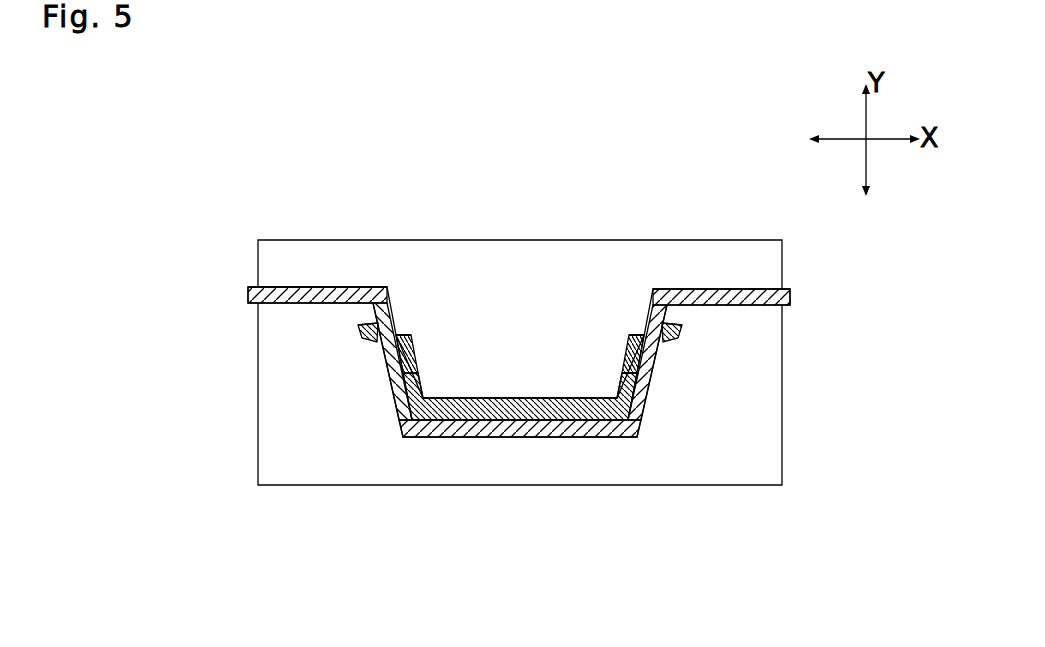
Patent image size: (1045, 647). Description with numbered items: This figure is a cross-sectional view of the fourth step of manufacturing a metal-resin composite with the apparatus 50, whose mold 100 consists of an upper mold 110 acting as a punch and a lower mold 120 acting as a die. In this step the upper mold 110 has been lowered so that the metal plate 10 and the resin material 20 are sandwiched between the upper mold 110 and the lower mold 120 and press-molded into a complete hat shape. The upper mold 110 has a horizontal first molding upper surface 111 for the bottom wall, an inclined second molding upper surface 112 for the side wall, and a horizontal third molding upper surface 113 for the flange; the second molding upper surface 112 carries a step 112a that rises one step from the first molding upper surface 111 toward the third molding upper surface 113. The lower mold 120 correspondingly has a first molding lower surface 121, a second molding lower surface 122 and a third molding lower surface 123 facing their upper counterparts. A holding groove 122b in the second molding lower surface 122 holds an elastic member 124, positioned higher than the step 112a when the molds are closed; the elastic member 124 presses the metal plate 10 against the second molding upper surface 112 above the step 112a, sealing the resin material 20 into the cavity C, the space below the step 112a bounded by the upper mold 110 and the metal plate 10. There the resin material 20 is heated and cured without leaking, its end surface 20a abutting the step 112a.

The apparatus 50 is at (208, 208).
The metal plate 10 is at (518, 380).
The resin material 20 is at (520, 381).
The end surface 20a is at (406, 335).
The mold 100 is at (532, 342).
The upper mold 110 is at (470, 243).
The first molding upper surface 111 is at (533, 398).
The second molding upper surface 112 is at (532, 266).
The step 112a is at (413, 337).
The third molding upper surface 113 is at (295, 287).
The lower mold 120 is at (540, 486).
The first molding lower surface 121 is at (428, 438).
The second molding lower surface 122 is at (397, 413).
The holding groove 122b is at (362, 338).
The third molding lower surface 123 is at (260, 287).
The elastic member 124 is at (870, 303).
The cavity C is at (562, 398).